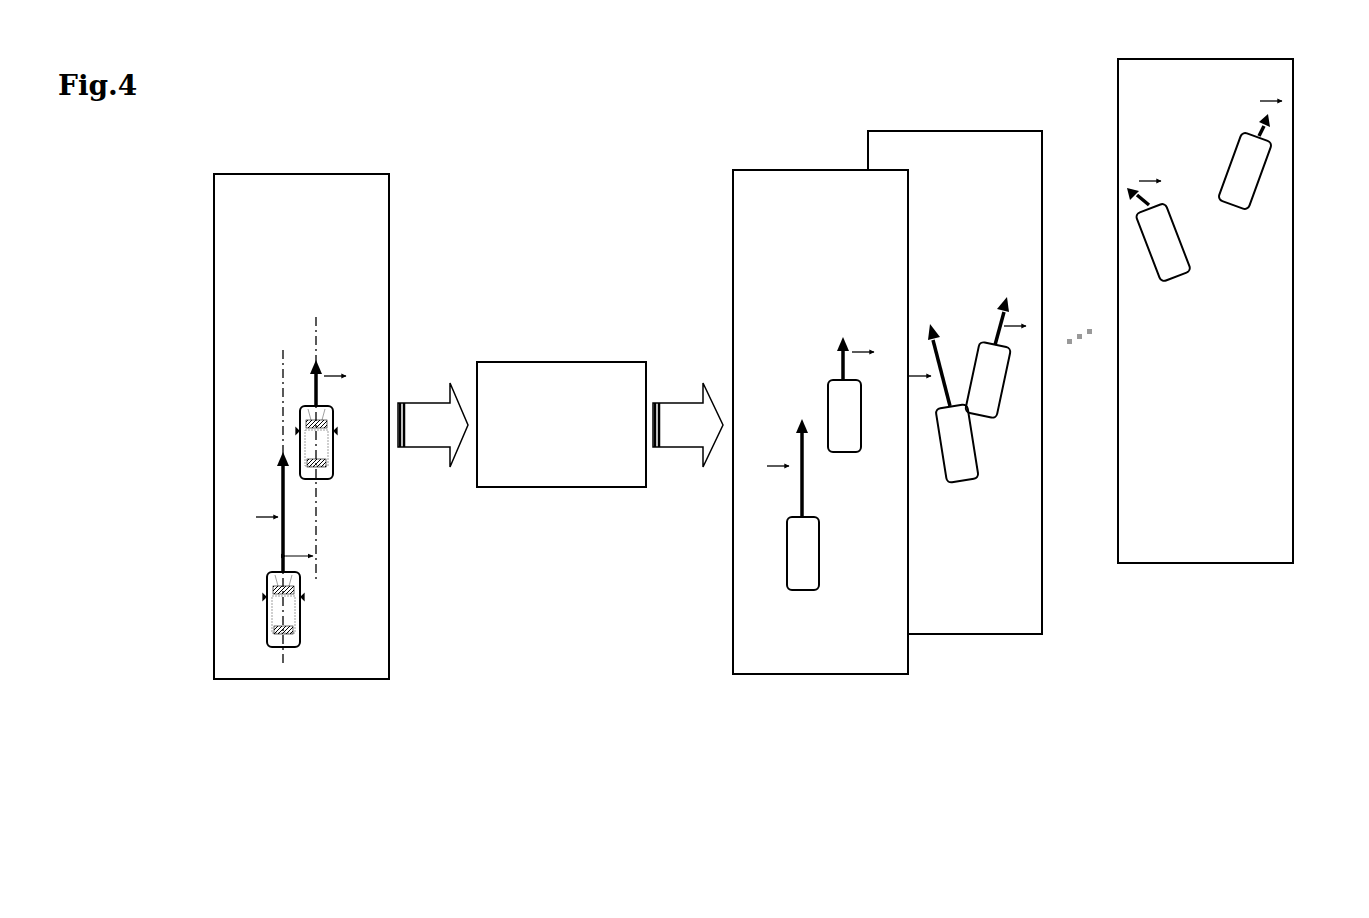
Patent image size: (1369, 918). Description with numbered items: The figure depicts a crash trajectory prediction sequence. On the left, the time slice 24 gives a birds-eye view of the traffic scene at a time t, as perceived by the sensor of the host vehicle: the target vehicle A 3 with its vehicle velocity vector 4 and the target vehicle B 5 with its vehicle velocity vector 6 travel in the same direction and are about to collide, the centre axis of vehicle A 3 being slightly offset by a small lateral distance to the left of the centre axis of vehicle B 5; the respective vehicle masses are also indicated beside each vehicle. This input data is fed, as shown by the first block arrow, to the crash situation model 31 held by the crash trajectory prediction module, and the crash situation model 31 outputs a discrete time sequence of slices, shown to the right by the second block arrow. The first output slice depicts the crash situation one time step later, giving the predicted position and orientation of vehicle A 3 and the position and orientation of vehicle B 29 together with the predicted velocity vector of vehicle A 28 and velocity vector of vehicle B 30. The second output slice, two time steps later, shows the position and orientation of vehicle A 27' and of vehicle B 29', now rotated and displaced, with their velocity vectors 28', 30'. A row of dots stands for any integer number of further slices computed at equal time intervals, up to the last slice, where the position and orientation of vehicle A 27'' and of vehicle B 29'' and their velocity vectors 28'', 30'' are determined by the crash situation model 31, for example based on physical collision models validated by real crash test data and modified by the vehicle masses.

The target vehicle A 3 is at (267, 625).
The vehicle velocity vector v_A 4 is at (258, 530).
The target vehicle B 5 is at (300, 440).
The vehicle velocity vector v_B 6 is at (350, 386).
The time slice 24 is at (304, 178).
The velocity vector v_A 28 is at (744, 472).
The position and orientation of vehicle B 29 is at (803, 386).
The velocity vector v_B 30 is at (855, 322).
The crash situation model 31 is at (561, 487).
The position and orientation of vehicle A 27' is at (1010, 443).
The velocity vector v_A 28' is at (949, 330).
The position and orientation of vehicle B 29' is at (1025, 383).
The velocity vector v_B 30' is at (1045, 299).
The position and orientation of vehicle A 27'' is at (1168, 282).
The velocity vector v_A 28'' is at (1103, 175).
The position and orientation of vehicle B 29'' is at (1283, 189).
The velocity vector v_B 30'' is at (1306, 135).